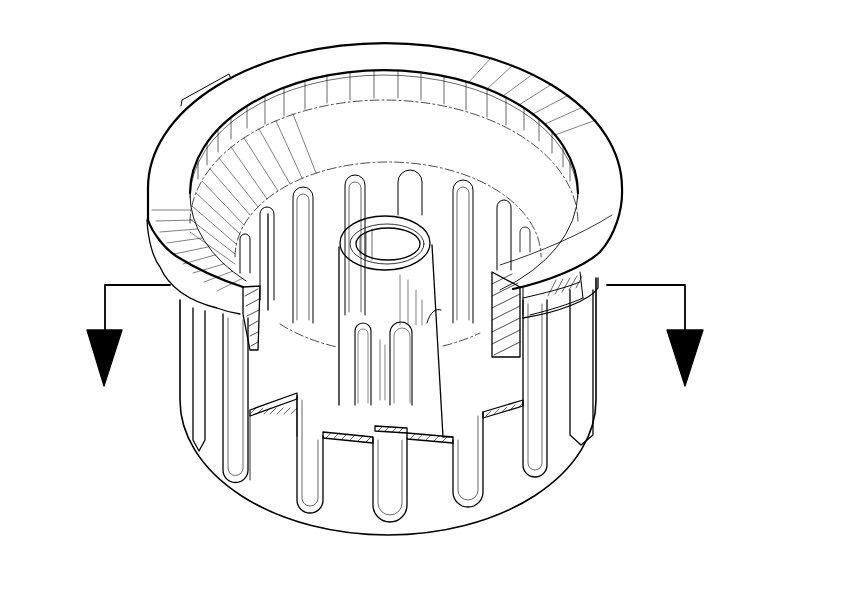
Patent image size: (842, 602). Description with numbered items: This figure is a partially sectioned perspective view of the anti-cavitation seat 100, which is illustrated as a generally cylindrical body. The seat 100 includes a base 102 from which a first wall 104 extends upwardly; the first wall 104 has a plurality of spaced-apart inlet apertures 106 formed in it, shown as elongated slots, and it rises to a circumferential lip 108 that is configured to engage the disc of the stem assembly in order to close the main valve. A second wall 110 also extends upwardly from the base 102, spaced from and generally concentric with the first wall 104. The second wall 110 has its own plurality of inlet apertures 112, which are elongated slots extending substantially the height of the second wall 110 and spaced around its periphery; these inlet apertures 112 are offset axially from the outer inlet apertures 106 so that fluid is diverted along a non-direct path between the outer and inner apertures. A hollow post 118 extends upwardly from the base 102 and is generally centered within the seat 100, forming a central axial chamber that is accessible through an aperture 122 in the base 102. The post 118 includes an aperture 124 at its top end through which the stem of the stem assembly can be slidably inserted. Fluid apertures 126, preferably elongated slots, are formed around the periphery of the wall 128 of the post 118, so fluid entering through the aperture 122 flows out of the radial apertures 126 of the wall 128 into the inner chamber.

The anti-cavitation seat 100 is at (97, 100).
The base 102 is at (290, 520).
The first wall 104 is at (277, 460).
The inlet apertures 106 is at (195, 428).
The circumferential lip 108 is at (176, 196).
The second wall 110 is at (487, 200).
The inlet apertures 112 is at (414, 183).
The hollow post 118 is at (352, 237).
The aperture 122 is at (397, 412).
The aperture 124 is at (393, 243).
The fluid apertures 126 is at (433, 393).
The wall of the post 128 is at (367, 300).